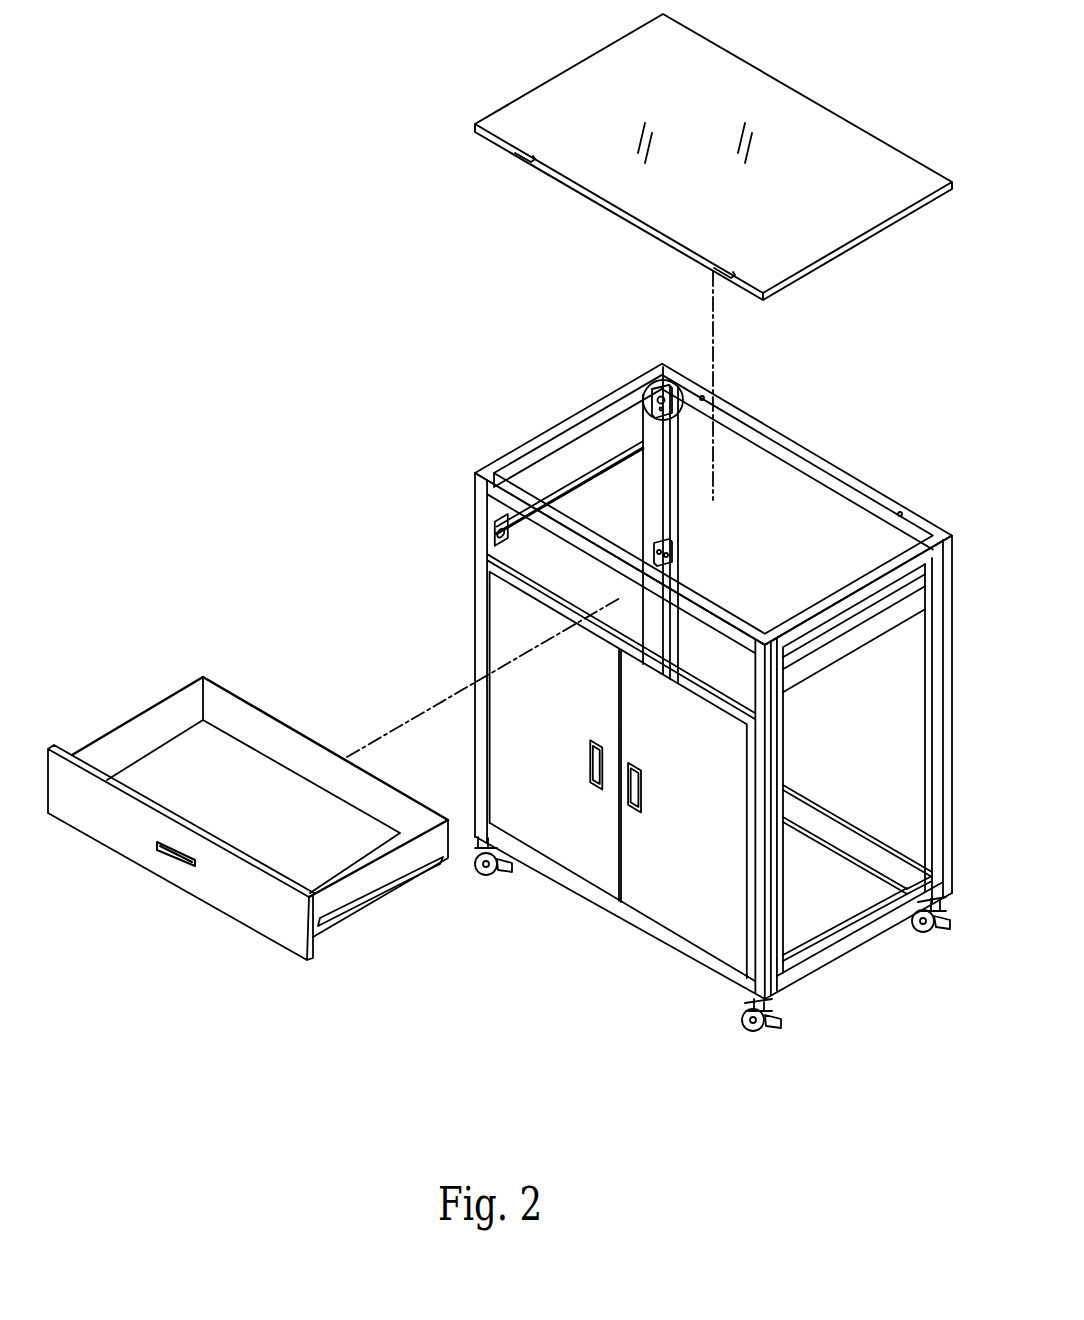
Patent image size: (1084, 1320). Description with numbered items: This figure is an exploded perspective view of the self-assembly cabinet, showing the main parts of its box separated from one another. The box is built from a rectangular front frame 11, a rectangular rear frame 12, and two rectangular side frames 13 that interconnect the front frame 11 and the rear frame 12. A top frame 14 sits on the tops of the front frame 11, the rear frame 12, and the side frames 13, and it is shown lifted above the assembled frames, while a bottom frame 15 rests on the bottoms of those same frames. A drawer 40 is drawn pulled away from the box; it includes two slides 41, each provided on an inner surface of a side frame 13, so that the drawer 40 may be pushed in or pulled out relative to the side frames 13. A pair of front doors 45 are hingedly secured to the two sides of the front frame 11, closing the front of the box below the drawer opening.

The front frame 11 is at (483, 580).
The rear frame 12 is at (818, 455).
The side frame 13 is at (578, 430).
The top frame 14 is at (483, 133).
The bottom frame 15 is at (841, 929).
The drawer 40 is at (240, 902).
The slide 41 is at (562, 483).
The front door 45 is at (590, 828).